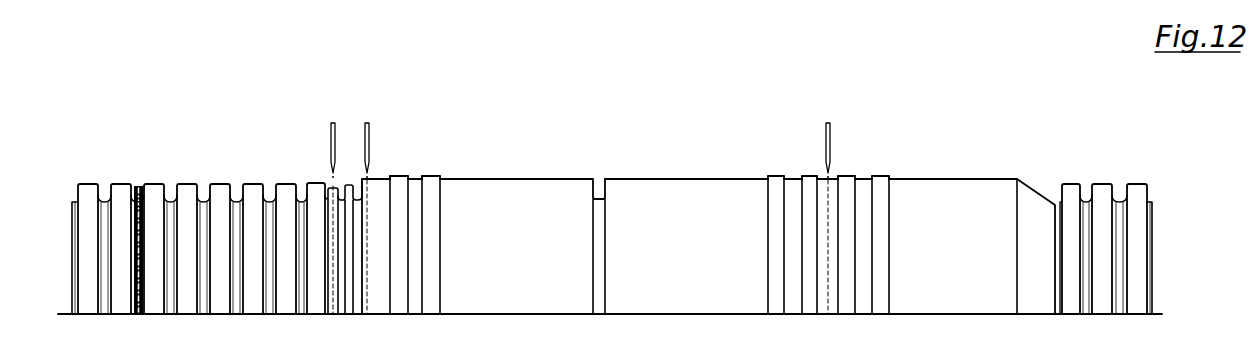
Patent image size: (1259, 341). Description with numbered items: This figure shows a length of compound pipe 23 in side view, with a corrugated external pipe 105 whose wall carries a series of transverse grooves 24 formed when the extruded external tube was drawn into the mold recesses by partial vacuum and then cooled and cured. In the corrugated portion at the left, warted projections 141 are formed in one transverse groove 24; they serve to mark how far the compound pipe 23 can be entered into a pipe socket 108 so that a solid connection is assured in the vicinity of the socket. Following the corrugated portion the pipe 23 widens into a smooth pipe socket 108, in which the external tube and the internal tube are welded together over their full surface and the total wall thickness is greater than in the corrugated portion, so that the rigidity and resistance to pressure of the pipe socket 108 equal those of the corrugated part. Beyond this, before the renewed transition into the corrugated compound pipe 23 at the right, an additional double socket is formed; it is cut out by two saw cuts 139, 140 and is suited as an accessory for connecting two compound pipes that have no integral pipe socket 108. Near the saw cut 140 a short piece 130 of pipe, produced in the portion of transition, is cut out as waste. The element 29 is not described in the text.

The compound pipe 23 is at (248, 162).
The transverse groove 24 is at (170, 193).
The cylindrical body section 29 is at (533, 314).
The corrugated external pipe 105 is at (1137, 183).
The pipe socket 108 is at (992, 179).
The piece of pipe 130 is at (348, 218).
The saw cut 139 is at (832, 145).
The saw cut 140 is at (333, 147).
The warted projections 141 is at (137, 185).